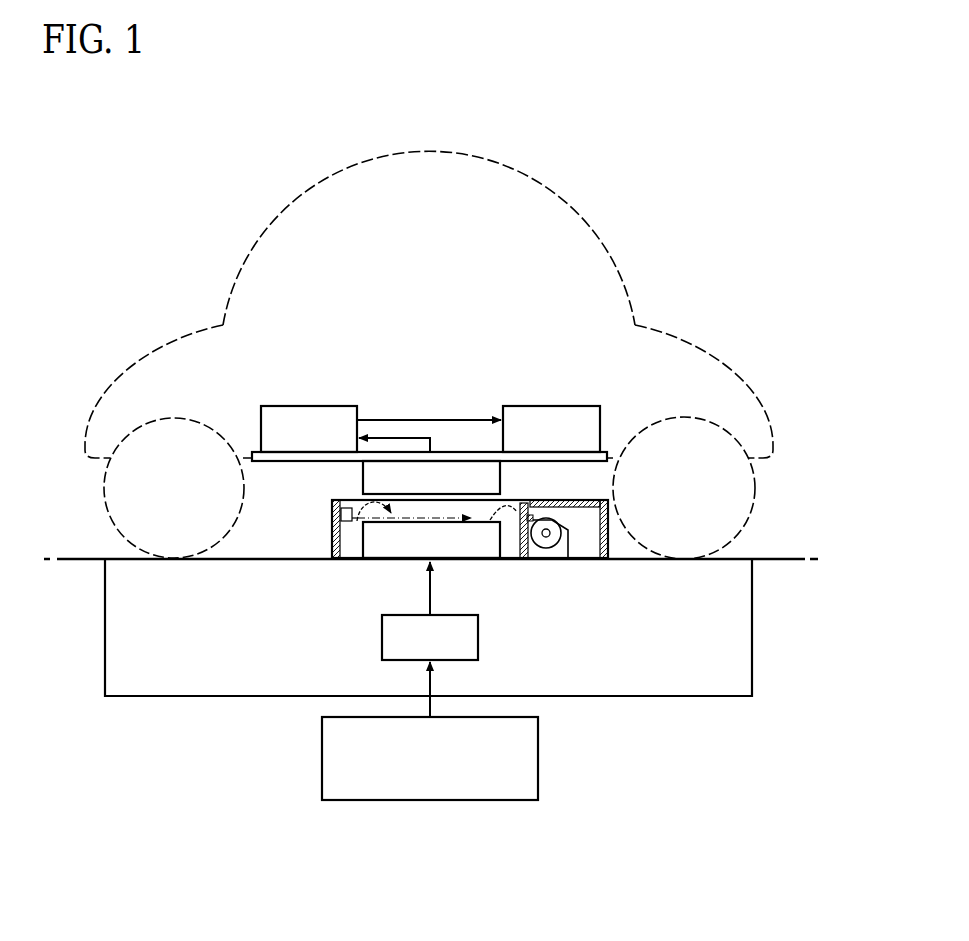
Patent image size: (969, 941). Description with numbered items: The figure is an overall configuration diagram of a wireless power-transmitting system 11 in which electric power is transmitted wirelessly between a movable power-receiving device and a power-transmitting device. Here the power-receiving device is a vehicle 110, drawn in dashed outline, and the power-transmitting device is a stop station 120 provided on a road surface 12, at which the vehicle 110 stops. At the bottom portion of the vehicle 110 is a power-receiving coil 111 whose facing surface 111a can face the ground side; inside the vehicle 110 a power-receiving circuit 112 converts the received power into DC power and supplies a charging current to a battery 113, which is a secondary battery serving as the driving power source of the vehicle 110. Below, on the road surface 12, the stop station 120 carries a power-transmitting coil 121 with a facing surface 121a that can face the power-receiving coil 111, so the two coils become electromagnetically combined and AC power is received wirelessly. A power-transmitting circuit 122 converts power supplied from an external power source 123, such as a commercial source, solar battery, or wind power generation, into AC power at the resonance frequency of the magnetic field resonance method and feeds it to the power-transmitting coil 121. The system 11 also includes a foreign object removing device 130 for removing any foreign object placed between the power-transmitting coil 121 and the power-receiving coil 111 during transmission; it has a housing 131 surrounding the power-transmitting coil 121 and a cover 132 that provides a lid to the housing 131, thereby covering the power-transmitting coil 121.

The wireless power-transmitting system 11 is at (160, 186).
The road surface 12 is at (80, 558).
The vehicle 110 is at (273, 210).
The power-receiving coil 111 is at (447, 453).
The facing surface 111a is at (482, 499).
The power-receiving circuit 112 is at (310, 406).
The battery 113 is at (555, 406).
The stop station 120 is at (105, 662).
The power-transmitting coil 121 is at (470, 560).
The facing surface 121a is at (355, 522).
The power-transmitting circuit 122 is at (478, 635).
The external power source 123 is at (538, 752).
The foreign object removing device 130 is at (322, 498).
The housing 131 is at (332, 535).
The cover 132 is at (517, 510).